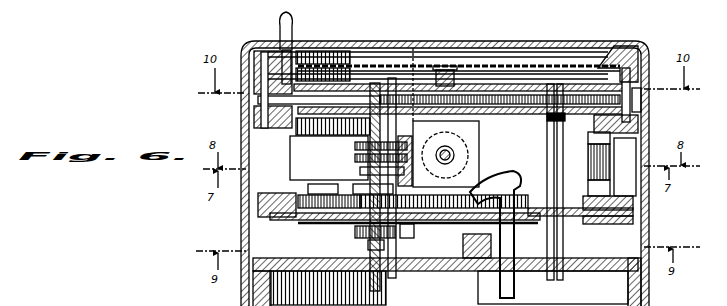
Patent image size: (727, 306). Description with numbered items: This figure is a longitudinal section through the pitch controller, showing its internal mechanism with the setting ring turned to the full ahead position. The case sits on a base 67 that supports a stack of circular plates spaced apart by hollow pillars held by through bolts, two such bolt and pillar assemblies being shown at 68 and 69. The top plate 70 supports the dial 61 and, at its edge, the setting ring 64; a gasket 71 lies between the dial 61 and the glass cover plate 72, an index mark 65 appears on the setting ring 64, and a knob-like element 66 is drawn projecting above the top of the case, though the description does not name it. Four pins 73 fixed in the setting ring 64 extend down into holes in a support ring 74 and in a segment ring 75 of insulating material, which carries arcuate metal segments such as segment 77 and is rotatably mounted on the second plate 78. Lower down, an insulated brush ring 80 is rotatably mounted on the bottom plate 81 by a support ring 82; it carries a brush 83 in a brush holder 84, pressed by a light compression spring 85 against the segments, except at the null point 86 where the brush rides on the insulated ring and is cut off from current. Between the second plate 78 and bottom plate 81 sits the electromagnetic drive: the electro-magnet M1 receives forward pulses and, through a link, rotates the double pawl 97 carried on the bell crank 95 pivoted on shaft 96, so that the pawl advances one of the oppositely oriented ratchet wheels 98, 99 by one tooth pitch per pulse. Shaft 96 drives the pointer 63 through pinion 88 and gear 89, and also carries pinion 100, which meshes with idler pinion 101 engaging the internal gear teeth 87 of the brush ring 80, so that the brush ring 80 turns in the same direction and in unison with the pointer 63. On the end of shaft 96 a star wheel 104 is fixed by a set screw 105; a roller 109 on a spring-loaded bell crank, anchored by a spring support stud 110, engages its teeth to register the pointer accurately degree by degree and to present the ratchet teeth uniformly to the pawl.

The setting ring 64 is at (636, 38).
The knob 66 is at (284, 12).
The gasket 71 is at (308, 46).
The glass cover plate 72 is at (424, 57).
The pointer 63 is at (493, 62).
The gear 89 is at (446, 66).
The top plate 70 is at (330, 76).
The dial 61 is at (374, 86).
The pinion 88 is at (358, 90).
The second plate 78 is at (516, 107).
The segment ring 75 is at (264, 122).
The pins 73 is at (247, 86).
The support ring 74 is at (634, 90).
The index mark 65 is at (604, 50).
The arcuate metal segment 77 is at (306, 132).
The bolt and pillar assembly 68 is at (374, 274).
The ratchet wheel 98 is at (346, 138).
The ratchet wheel 99 is at (346, 150).
The shaft 96 is at (358, 164).
The bell crank 95 is at (408, 161).
The idler pinion 101 is at (322, 181).
The pinion 100 is at (368, 182).
The electro-magnet M1 is at (458, 117).
The double pawl 97 is at (445, 155).
The internal gear teeth 87 is at (495, 234).
The bolt and pillar assembly 69 is at (544, 234).
The brush 83 is at (580, 131).
The brush holder 84 is at (580, 151).
The compression spring 85 is at (584, 176).
The null point 86 is at (610, 134).
The bottom plate 81 is at (576, 209).
The support ring 82 is at (598, 216).
The brush ring 80 is at (250, 204).
The star wheel 104 is at (346, 224).
The set screw 105 is at (362, 236).
The roller 109 is at (404, 224).
The spring support stud 110 is at (460, 236).
The base 67 is at (586, 263).